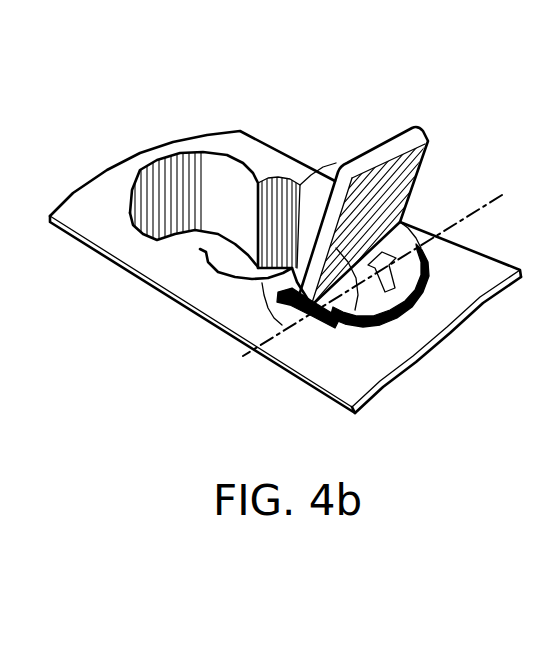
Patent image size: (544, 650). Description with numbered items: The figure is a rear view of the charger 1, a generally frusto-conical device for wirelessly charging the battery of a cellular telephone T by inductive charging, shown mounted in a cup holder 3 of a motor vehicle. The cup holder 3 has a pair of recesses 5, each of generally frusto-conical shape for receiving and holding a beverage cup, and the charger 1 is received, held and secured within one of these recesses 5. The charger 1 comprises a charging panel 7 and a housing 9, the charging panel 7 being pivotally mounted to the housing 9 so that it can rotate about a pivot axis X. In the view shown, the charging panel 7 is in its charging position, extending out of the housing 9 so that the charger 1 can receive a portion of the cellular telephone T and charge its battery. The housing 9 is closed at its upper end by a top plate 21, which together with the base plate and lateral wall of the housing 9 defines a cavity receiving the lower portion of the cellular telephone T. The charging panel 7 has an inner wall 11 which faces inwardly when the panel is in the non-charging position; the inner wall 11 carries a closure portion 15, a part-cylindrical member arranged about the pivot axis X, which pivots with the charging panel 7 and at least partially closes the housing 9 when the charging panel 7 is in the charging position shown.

The charger 1 is at (312, 327).
The cup holder 3 is at (330, 118).
The recess 5 is at (273, 298).
The charging panel 7 is at (408, 265).
The housing 9 is at (322, 327).
The inner wall 11 is at (315, 293).
The closure portion 15 is at (377, 297).
The top plate 21 is at (283, 313).
The cellular telephone T is at (420, 165).
The pivot axis X is at (383, 275).